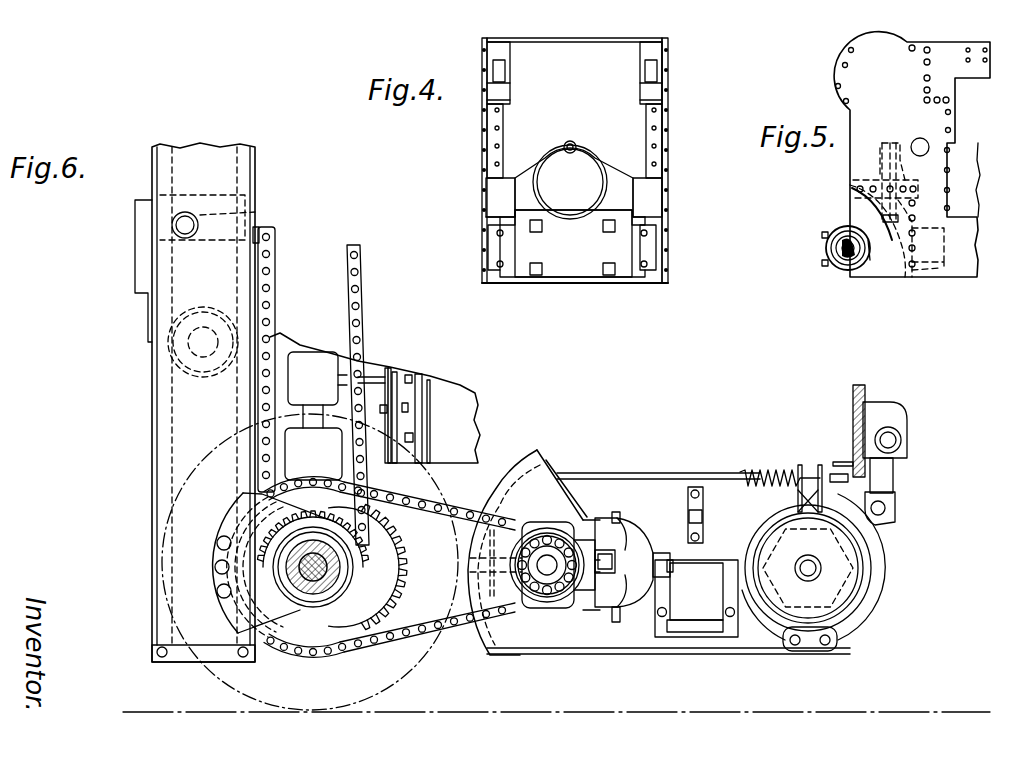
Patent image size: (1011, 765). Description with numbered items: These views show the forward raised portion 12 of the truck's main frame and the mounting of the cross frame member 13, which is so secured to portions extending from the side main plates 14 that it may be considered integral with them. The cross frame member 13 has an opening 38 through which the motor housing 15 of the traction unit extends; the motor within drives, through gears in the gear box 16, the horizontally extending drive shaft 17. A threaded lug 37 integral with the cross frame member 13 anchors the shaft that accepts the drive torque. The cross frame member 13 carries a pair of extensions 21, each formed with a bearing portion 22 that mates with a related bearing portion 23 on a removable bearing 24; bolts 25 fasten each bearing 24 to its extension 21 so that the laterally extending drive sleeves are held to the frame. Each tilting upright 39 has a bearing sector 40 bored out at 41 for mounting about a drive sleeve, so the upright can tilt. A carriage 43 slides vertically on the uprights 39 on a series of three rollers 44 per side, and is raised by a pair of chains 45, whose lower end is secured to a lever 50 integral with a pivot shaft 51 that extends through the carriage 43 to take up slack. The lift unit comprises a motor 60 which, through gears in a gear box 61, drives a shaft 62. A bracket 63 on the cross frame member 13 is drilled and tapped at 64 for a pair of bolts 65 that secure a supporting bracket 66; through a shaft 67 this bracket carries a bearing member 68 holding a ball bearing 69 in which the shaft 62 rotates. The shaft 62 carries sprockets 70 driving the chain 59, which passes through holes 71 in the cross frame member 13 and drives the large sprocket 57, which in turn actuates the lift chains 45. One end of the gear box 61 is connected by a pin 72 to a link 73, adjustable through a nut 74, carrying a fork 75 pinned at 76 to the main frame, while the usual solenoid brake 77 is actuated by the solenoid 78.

In FIG. 4, the forward raised portion 12 is at (650, 38).
In FIG. 5, the forward raised portion 12 is at (876, 33).
In FIG. 4, the cross frame member 13 is at (600, 156).
In FIG. 5, the cross frame member 13 is at (880, 170).
In FIG. 4, the side main plates 14 is at (662, 121).
In FIG. 6, the motor housing 15 is at (453, 420).
In FIG. 6, the gear box 16 is at (290, 442).
In FIG. 6, the drive shaft 17 is at (300, 572).
In FIG. 4, the extensions 21 is at (542, 226).
In FIG. 5, the extensions 21 is at (868, 258).
In FIG. 5, the bearing portion 22 is at (850, 254).
In FIG. 5, the bearing portion 23 is at (845, 260).
In FIG. 4, the removable bearing 24 is at (654, 243).
In FIG. 5, the removable bearing 24 is at (826, 250).
In FIG. 4, the bolts 25 is at (496, 262).
In FIG. 5, the bolts 25 is at (822, 235).
In FIG. 4, the threaded lug 37 is at (569, 142).
In FIG. 5, the threaded lug 37 is at (880, 148).
In FIG. 4, the opening 38 is at (594, 172).
In FIG. 6, the uprights 39 is at (152, 490).
In FIG. 6, the bearing sector 40 is at (283, 617).
In FIG. 6, the bore 41 is at (337, 590).
In FIG. 6, the carriage 43 is at (140, 296).
In FIG. 6, the rollers 44 is at (185, 372).
In FIG. 6, the chains 45 is at (275, 300).
In FIG. 6, the lever 50 is at (250, 215).
In FIG. 6, the pivot shaft 51 is at (175, 228).
In FIG. 6, the third sprocket 57 is at (398, 542).
In FIG. 6, the chain 59 is at (455, 500).
In FIG. 6, the motor 60 is at (878, 608).
In FIG. 6, the gear box 61 is at (680, 472).
In FIG. 6, the shaft 62 is at (560, 548).
In FIG. 5, the bracket 63 is at (920, 230).
In FIG. 6, the bracket 63 is at (540, 452).
In FIG. 5, the drilled and tapped portion 64 is at (948, 277).
In FIG. 6, the drilled and tapped portion 64 is at (568, 530).
In FIG. 6, the bolts 65 is at (616, 512).
In FIG. 6, the supporting bracket 66 is at (630, 600).
In FIG. 6, the shaft 67 is at (612, 565).
In FIG. 6, the bearing member 68 is at (554, 578).
In FIG. 6, the ball bearing 69 is at (547, 595).
In FIG. 6, the sprockets 70 is at (466, 628).
In FIG. 5, the holes 71 is at (890, 238).
In FIG. 6, the pin 72 is at (885, 512).
In FIG. 6, the link 73 is at (895, 500).
In FIG. 6, the nut 74 is at (893, 476).
In FIG. 6, the fork 75 is at (895, 447).
In FIG. 6, the pin 76 is at (907, 428).
In FIG. 6, the solenoid brake 77 is at (793, 468).
In FIG. 6, the solenoid 78 is at (712, 625).